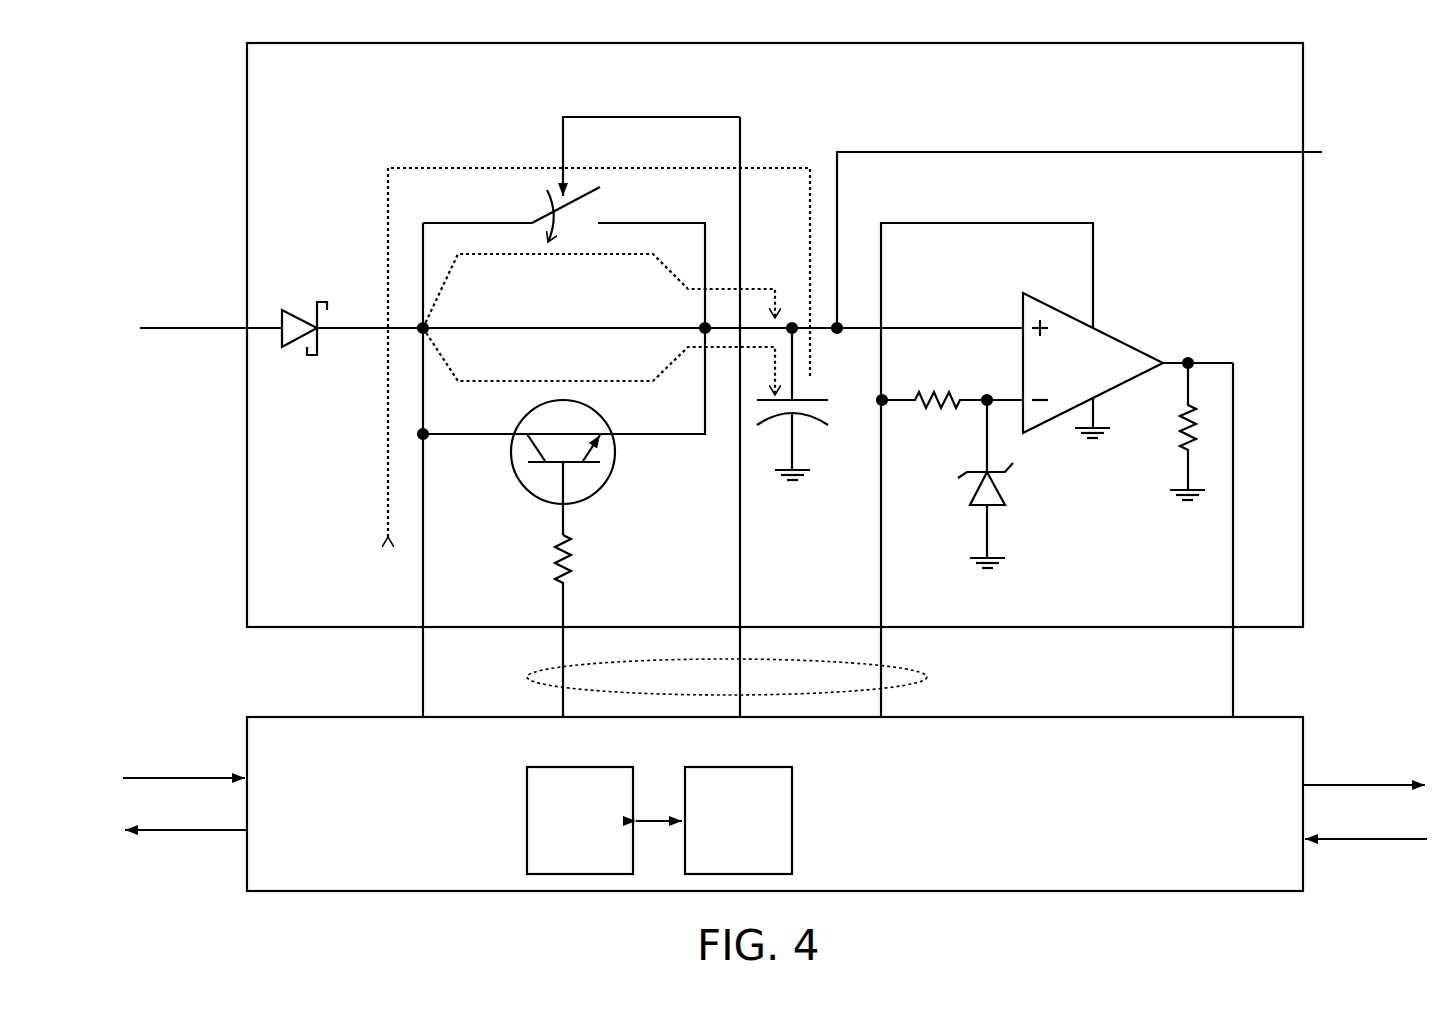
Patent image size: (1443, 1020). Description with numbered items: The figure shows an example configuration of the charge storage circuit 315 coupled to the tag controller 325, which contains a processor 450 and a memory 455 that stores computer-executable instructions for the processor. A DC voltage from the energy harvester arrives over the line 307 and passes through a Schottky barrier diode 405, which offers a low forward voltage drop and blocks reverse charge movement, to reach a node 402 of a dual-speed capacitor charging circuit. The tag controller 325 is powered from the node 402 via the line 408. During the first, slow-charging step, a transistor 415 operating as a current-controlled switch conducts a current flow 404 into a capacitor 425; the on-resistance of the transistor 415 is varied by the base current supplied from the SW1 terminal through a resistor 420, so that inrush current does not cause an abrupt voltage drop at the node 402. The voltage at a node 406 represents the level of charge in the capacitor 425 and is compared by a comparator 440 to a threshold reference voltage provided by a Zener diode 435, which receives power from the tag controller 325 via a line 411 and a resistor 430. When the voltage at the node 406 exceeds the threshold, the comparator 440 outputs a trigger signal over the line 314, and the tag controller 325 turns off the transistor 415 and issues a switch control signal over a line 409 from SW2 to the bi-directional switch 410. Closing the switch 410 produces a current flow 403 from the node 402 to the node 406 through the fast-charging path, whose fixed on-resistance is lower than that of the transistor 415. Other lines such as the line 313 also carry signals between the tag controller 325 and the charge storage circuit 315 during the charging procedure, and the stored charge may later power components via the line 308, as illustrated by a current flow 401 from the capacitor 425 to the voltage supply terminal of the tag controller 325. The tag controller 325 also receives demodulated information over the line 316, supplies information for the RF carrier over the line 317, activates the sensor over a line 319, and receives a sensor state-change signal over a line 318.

The line 307 is at (175, 328).
The line 308 is at (900, 152).
The line 313 is at (925, 675).
The line 314 is at (1232, 693).
The charge storage circuit 315 is at (775, 335).
The line 316 is at (158, 778).
The line 317 is at (158, 832).
The line 318 is at (1340, 840).
The line 319 is at (1340, 785).
The tag controller 325 is at (775, 804).
The current flow 401 is at (405, 168).
The node 402 is at (432, 325).
The current flow 403 is at (530, 255).
The current flow 404 is at (535, 380).
The Schottky barrier diode 405 is at (287, 300).
The node 406 is at (697, 325).
The line 408 is at (425, 597).
The line 409 is at (742, 590).
The bi-directional switch 410 is at (526, 208).
The line 411 is at (880, 590).
The transistor 415 is at (616, 490).
The resistor 420 is at (585, 566).
The capacitor 425 is at (815, 432).
The resistor 430 is at (923, 422).
The Zener diode 435 is at (1005, 515).
The comparator 440 is at (1122, 325).
The processor 450 is at (580, 820).
The memory 455 is at (738, 820).